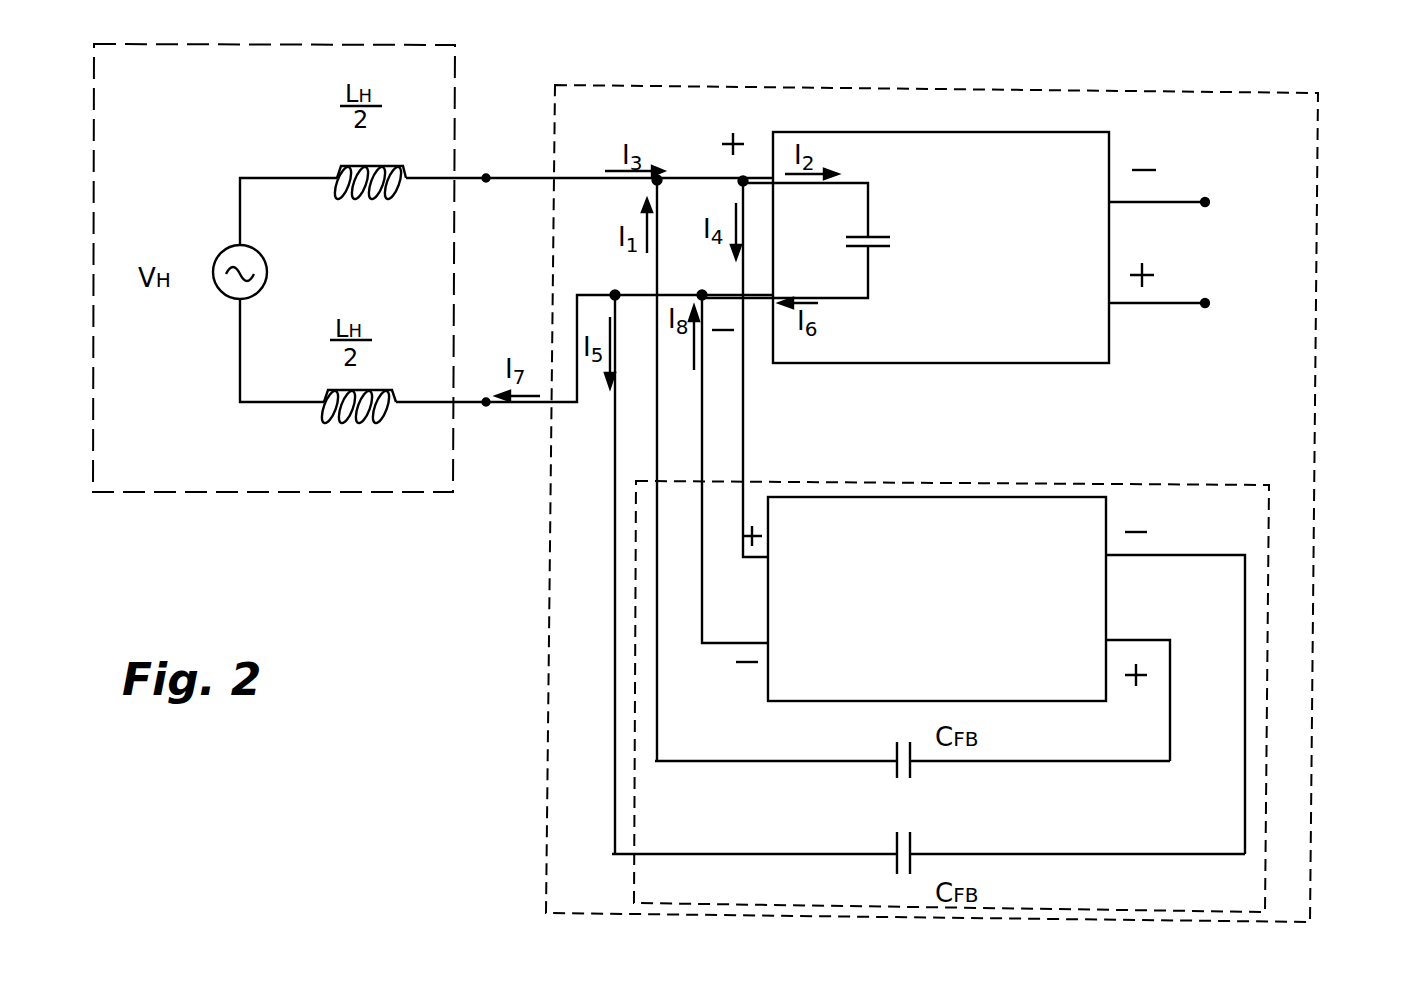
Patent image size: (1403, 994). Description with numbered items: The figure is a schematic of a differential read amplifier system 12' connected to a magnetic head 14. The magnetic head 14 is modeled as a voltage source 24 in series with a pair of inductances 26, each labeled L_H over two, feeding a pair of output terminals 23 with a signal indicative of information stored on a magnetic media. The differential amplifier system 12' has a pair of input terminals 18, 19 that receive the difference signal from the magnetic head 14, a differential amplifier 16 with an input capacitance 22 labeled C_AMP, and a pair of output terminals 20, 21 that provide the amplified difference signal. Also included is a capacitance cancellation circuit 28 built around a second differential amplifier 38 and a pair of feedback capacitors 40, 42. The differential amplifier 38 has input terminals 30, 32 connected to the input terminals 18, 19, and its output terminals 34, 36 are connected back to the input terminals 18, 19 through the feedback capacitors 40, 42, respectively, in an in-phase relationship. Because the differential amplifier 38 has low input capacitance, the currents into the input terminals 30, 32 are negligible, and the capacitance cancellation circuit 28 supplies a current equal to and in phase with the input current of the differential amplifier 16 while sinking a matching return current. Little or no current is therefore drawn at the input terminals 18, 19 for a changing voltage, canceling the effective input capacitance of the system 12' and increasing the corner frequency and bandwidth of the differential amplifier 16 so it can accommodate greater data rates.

The differential amplifier system 12' is at (974, 503).
The magnetic head 14 is at (297, 46).
The differential amplifier 16 is at (917, 132).
The input terminal 18 is at (566, 178).
The input terminal 19 is at (567, 404).
The output terminal 20 is at (1164, 202).
The output terminal 21 is at (1134, 305).
The input capacitance 22 is at (878, 250).
The output terminals 23 is at (441, 184).
The voltage source 24 is at (222, 250).
The inductances 26 is at (355, 184).
The capacitance cancellation circuit 28 is at (1178, 483).
The input terminal 30 is at (752, 560).
The input terminal 32 is at (706, 646).
The output terminal 34 is at (1172, 656).
The output terminal 36 is at (1152, 558).
The differential amplifier 38 is at (1004, 567).
The feedback capacitor 40 is at (894, 760).
The feedback capacitor 42 is at (894, 850).